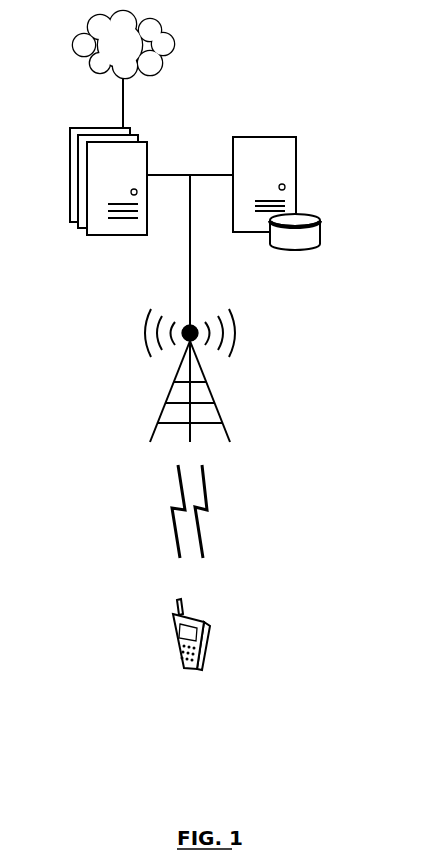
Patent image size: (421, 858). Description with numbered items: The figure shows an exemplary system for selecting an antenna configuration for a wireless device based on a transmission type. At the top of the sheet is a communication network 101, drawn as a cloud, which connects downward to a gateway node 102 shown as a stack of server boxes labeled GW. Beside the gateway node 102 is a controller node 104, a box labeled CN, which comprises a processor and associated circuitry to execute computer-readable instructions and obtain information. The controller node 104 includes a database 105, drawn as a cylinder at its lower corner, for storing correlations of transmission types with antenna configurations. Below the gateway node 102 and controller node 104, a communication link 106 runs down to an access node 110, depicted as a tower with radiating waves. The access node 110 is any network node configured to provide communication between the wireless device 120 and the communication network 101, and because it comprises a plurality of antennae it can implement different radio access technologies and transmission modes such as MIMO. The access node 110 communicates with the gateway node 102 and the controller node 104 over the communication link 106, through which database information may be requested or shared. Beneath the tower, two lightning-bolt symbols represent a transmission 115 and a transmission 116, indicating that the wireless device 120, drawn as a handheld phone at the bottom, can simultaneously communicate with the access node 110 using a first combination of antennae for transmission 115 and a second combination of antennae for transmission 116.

The communication network 101 is at (111, 56).
The gateway node 102 is at (88, 128).
The controller node 104 is at (293, 137).
The database 105 is at (318, 216).
The communication link 106 is at (188, 272).
The access node 110 is at (172, 395).
The transmission 115 is at (172, 520).
The transmission 116 is at (207, 511).
The wireless device 120 is at (178, 662).